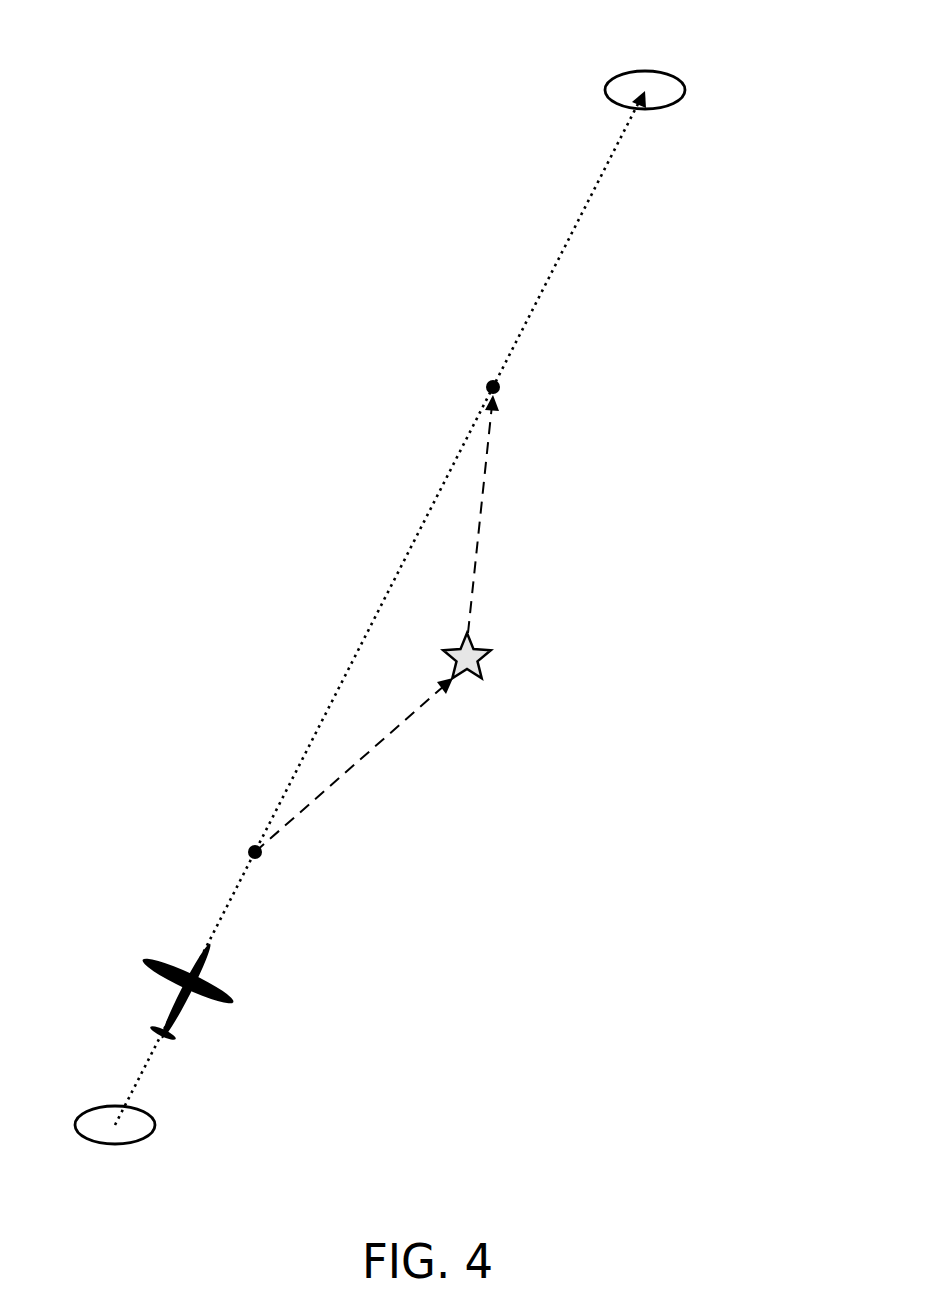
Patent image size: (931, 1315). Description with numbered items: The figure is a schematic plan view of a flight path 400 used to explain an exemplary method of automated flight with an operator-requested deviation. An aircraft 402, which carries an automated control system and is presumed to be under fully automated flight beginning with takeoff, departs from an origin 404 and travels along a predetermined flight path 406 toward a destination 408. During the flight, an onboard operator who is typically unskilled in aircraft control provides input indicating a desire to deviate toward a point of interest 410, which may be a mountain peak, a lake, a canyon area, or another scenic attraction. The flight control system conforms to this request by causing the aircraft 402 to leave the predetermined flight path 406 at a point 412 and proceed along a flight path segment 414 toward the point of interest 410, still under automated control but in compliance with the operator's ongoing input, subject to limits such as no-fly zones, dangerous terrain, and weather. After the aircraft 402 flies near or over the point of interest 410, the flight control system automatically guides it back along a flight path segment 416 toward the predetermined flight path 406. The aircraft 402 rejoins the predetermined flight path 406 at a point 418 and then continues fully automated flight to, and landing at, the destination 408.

The flight path 400 is at (766, 56).
The aircraft 402 is at (233, 1000).
The origin 404 is at (117, 1105).
The predetermined flight path 406 is at (390, 585).
The destination 408 is at (627, 72).
The point of interest 410 is at (490, 655).
The point 412 is at (252, 846).
The flight path segment 414 is at (380, 743).
The flight path segment 416 is at (483, 505).
The point 418 is at (490, 380).